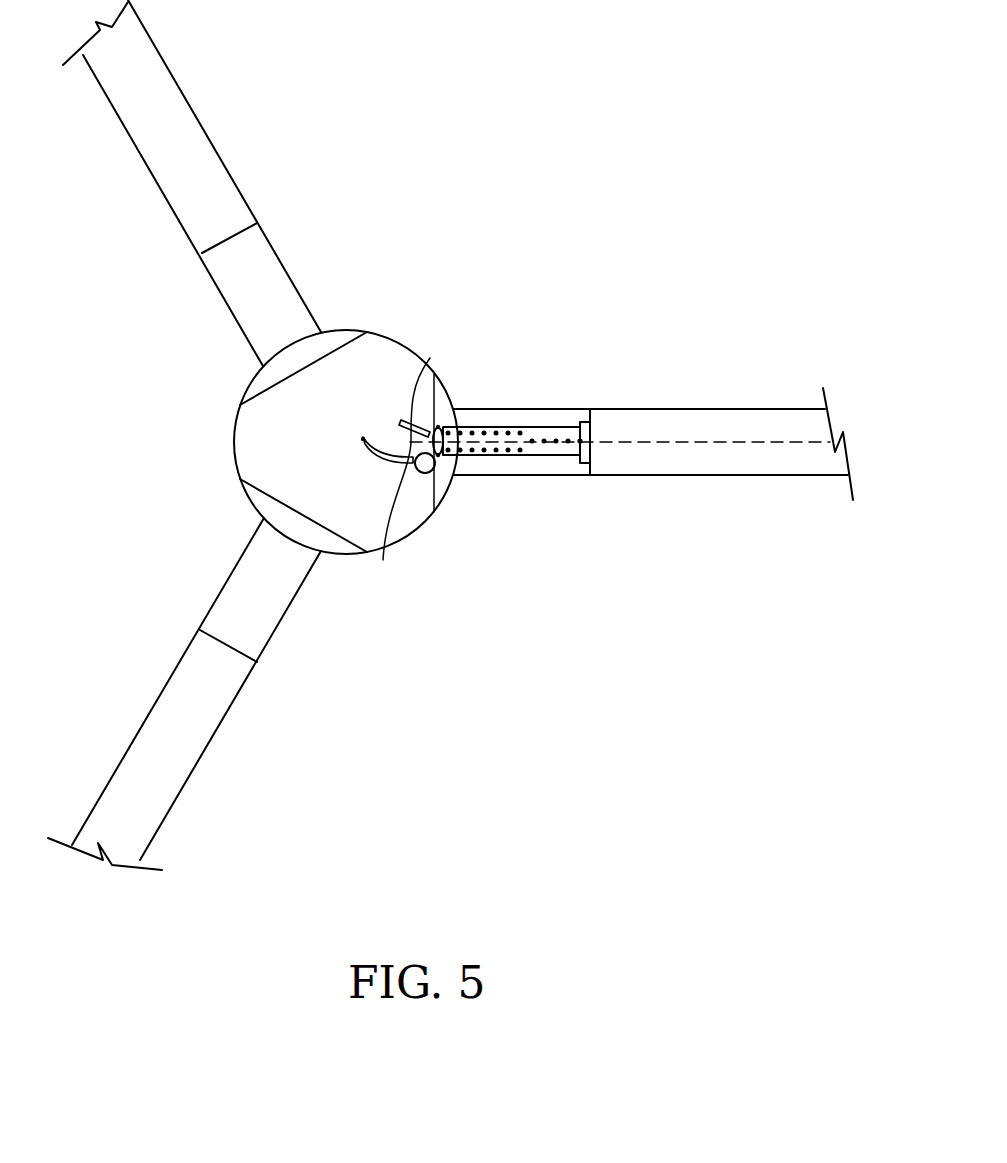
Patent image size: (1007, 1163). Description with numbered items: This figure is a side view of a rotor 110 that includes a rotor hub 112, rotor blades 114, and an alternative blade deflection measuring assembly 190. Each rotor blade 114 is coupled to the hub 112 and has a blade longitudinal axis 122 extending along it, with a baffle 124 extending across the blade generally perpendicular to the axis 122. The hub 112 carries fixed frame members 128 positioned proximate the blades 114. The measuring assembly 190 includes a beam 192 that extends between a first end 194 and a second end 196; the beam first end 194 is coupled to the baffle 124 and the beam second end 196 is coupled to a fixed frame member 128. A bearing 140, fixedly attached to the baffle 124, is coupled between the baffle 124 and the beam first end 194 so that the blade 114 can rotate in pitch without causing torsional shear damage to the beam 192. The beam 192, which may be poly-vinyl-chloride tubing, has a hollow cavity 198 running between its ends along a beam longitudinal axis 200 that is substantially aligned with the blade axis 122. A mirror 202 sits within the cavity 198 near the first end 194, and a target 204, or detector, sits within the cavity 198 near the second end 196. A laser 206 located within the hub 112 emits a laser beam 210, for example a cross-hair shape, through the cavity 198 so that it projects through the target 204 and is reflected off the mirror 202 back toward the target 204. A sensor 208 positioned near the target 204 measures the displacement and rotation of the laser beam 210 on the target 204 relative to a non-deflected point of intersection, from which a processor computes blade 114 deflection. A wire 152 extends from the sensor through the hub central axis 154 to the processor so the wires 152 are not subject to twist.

The rotor 110 is at (606, 80).
The rotor hub 112 is at (258, 451).
The rotor blade 114 is at (150, 142).
The blade longitudinal axis 122 is at (732, 440).
The baffle 124 is at (593, 468).
The fixed frame member 128 is at (268, 388).
The bearing 140 is at (607, 422).
The wire 152 is at (370, 461).
The hub central axis 154 is at (363, 437).
The blade deflection measuring assembly 190 is at (524, 622).
The beam 192 is at (534, 425).
The beam first end 194 is at (573, 420).
The beam second end 196 is at (443, 428).
The hollow cavity 198 is at (467, 456).
The beam longitudinal axis 200 is at (490, 456).
The mirror 202 is at (575, 456).
The target 204 is at (383, 560).
The laser 206 is at (434, 374).
The sensor 208 is at (423, 474).
The laser beam 210 is at (484, 430).